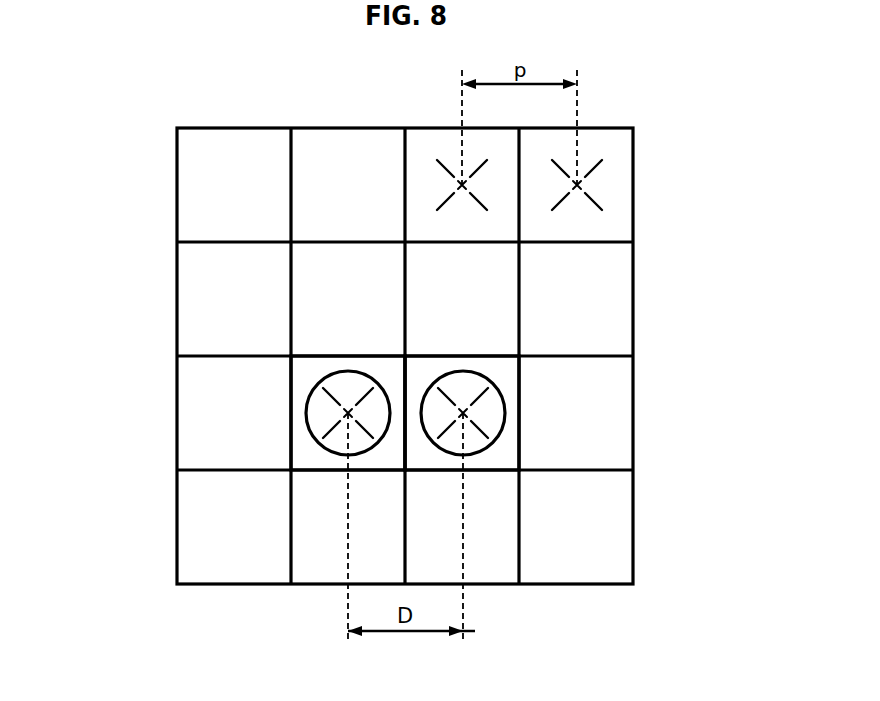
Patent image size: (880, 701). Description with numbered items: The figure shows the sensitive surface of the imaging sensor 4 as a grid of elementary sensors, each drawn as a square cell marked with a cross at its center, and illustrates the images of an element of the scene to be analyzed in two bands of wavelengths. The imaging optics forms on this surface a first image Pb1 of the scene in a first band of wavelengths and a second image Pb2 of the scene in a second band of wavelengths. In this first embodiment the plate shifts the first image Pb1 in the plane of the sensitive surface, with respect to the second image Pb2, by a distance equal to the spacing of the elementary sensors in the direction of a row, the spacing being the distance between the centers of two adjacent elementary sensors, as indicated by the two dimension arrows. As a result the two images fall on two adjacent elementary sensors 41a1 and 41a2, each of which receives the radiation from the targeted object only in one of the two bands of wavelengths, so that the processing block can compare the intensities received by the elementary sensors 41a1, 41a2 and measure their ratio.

The imaging sensor 4 is at (94, 285).
The first image Pb1 is at (318, 382).
The second image Pb2 is at (490, 440).
The first elementary sensor 41a1 is at (322, 470).
The second elementary sensor 41a2 is at (522, 413).